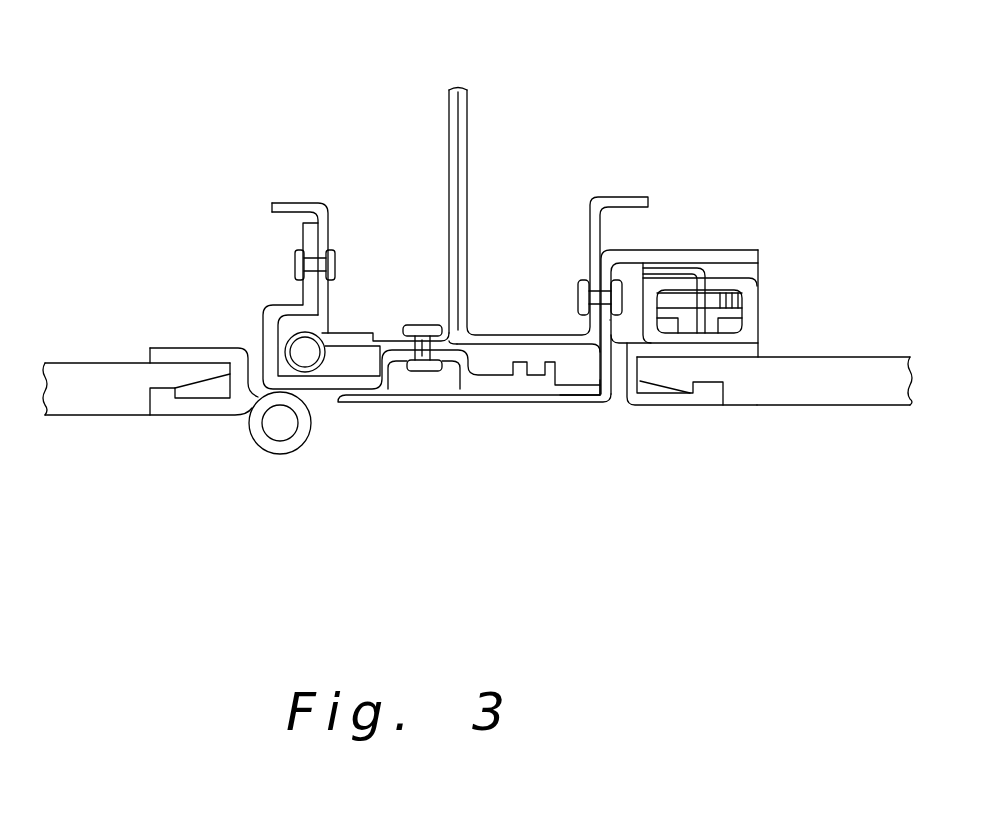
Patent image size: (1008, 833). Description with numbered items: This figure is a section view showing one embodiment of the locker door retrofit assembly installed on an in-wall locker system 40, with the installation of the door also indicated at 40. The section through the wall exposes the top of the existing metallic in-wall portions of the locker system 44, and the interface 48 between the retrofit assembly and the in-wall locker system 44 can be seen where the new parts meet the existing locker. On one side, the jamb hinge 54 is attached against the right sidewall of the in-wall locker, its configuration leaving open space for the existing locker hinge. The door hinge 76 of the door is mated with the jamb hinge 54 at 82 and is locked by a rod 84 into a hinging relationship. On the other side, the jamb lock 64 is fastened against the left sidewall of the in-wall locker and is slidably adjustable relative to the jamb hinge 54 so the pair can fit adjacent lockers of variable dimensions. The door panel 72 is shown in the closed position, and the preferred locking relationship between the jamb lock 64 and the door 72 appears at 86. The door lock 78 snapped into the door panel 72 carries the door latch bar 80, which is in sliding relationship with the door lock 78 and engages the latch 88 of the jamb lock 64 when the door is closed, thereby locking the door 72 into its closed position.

The locker door retrofit assembly installed on an in-wall locker system 40 is at (637, 148).
The in-wall locker system 44 is at (468, 127).
The interface between the locker door retrofit assembly and the in-wall locker syste 48 is at (463, 438).
The jamb hinge 54 is at (263, 323).
The jamb lock 64 is at (603, 408).
The door panel 72 is at (808, 356).
The door hinge 76 is at (195, 416).
The door lock 78 is at (758, 320).
The door latch bar 80 is at (745, 294).
The mating of door hinge with jamb hinge 82 is at (279, 456).
The rod 84 is at (292, 440).
The locking relationship between jamb lock and door 86 is at (752, 226).
The latch 88 is at (706, 270).